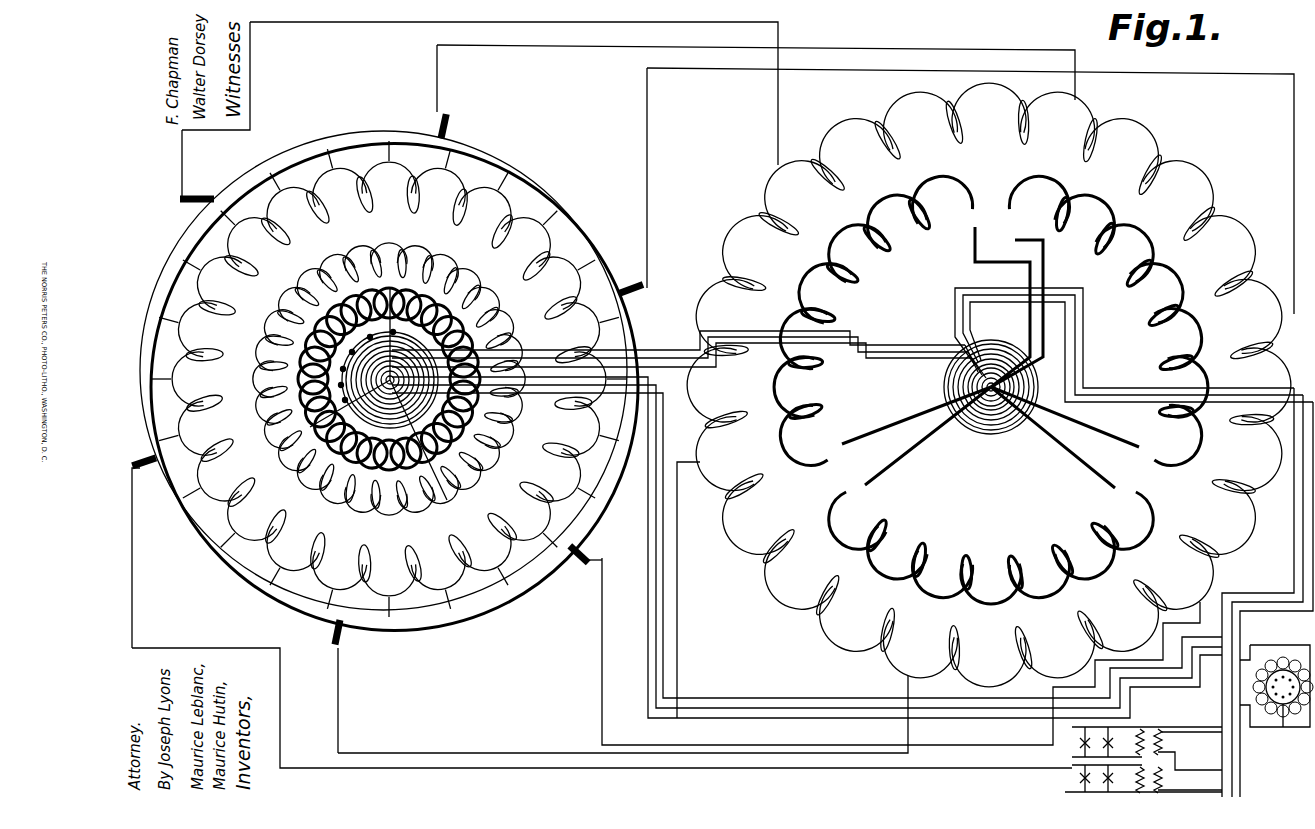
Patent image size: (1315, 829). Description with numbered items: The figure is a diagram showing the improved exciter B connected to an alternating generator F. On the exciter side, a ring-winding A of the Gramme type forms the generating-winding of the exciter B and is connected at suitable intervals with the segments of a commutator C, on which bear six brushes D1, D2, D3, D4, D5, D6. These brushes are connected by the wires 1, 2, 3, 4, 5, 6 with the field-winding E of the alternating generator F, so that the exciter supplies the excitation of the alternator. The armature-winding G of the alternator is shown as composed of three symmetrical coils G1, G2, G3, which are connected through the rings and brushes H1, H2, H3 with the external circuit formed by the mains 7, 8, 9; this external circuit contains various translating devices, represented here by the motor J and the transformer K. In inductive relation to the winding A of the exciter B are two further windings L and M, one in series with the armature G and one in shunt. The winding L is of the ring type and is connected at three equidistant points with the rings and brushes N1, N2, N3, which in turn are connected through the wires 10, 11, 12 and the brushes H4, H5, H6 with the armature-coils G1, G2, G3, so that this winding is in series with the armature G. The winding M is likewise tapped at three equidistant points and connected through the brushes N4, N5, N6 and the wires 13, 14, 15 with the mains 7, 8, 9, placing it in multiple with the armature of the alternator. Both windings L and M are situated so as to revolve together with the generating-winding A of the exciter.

The ring-winding A is at (410, 300).
The exciter B is at (400, 330).
The commutator C is at (558, 242).
The brush D1 is at (454, 118).
The brush D2 is at (655, 282).
The brush D3 is at (580, 562).
The brush D4 is at (348, 642).
The brush D5 is at (138, 460).
The brush D6 is at (184, 203).
The field-winding E is at (1185, 160).
The alternating generator F is at (1110, 300).
The armature-winding G is at (925, 190).
The armature coil G1 is at (1160, 345).
The armature coil G2 is at (985, 580).
The armature coil G3 is at (835, 305).
The ring and brush H1 is at (962, 322).
The ring and brush H2 is at (968, 335).
The ring and brush H3 is at (972, 345).
The brush H4 is at (958, 355).
The brush H5 is at (962, 362).
The brush H6 is at (968, 368).
The motor J is at (1280, 710).
The transformer K is at (1150, 730).
The series winding L is at (430, 308).
The shunt winding M is at (486, 294).
The ring and brush N1 is at (391, 332).
The ring and brush N2 is at (369, 338).
The ring and brush N3 is at (350, 352).
The brush N4 is at (341, 369).
The brush N5 is at (340, 385).
The brush N6 is at (343, 400).
The wire 1 is at (825, 54).
The wire 2 is at (705, 72).
The wire 3 is at (1025, 745).
The wire 4 is at (510, 753).
The wire 5 is at (548, 768).
The wire 6 is at (684, 22).
The external circuit main 7 is at (1294, 518).
The external circuit main 8 is at (1300, 538).
The external circuit main 9 is at (1308, 556).
The wire 10 is at (722, 329).
The wire 11 is at (730, 336).
The wire 12 is at (738, 343).
The wire 13 is at (660, 522).
The wire 14 is at (656, 546).
The wire 15 is at (654, 570).